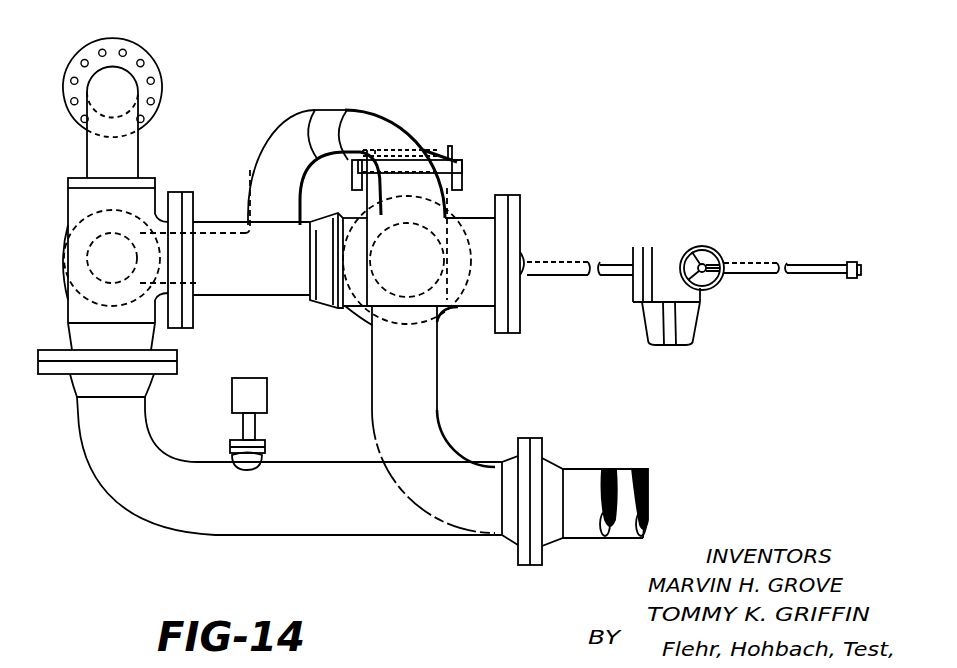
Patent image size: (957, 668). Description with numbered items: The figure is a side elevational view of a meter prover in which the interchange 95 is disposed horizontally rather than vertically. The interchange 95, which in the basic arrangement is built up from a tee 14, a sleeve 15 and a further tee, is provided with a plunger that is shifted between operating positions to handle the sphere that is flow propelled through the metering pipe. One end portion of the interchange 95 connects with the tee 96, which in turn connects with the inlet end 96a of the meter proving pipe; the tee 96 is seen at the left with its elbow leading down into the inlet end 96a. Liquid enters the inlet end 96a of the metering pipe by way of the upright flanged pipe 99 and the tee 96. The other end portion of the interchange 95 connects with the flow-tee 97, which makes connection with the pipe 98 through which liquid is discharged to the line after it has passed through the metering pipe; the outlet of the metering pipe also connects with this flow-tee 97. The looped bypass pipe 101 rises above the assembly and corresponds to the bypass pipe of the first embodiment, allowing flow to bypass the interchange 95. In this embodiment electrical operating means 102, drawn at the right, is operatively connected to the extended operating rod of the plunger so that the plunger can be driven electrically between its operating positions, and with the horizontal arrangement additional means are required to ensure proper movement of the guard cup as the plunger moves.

The tee 14 is at (485, 302).
The sleeve 15 is at (228, 296).
The interchange 95 is at (334, 318).
The tee 96 is at (68, 308).
The inlet end of the meter proving pipe 96a is at (150, 452).
The flow-tee 97 is at (466, 185).
The pipe 98 is at (213, 235).
The pipe 99 is at (133, 158).
The bypass pipe 101 is at (292, 118).
The electrical operating means 102 is at (662, 250).